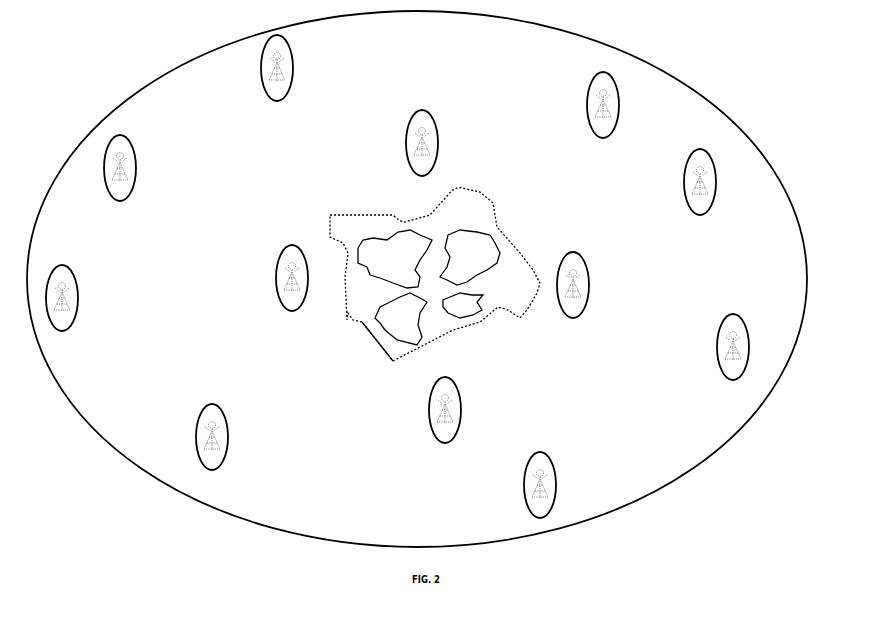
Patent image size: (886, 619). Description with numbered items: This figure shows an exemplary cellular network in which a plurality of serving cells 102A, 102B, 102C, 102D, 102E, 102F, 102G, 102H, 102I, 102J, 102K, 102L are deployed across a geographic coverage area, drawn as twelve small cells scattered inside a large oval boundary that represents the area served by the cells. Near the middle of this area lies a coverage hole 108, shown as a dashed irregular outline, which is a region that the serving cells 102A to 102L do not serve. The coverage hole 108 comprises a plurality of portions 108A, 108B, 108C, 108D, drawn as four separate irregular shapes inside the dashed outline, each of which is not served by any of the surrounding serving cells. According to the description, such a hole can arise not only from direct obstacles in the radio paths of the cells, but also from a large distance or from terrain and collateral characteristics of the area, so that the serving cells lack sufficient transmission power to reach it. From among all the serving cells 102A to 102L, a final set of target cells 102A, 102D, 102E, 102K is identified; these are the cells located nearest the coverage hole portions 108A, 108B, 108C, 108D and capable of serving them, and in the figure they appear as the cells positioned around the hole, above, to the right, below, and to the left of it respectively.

The serving cell 102A is at (432, 146).
The serving cell 102B is at (613, 108).
The serving cell 102C is at (710, 185).
The serving cell 102D is at (583, 288).
The serving cell 102E is at (455, 413).
The serving cell 102F is at (745, 350).
The serving cell 102G is at (550, 490).
The serving cell 102H is at (222, 438).
The serving cell 102I is at (72, 302).
The serving cell 102J is at (130, 171).
The serving cell 102K is at (280, 278).
The serving cell 102L is at (287, 72).
The coverage hole 108 is at (477, 190).
The portion of the coverage hole 108A is at (483, 311).
The portion of the coverage hole 108B is at (373, 321).
The portion of the coverage hole 108C is at (392, 242).
The portion of the coverage hole 108D is at (500, 226).